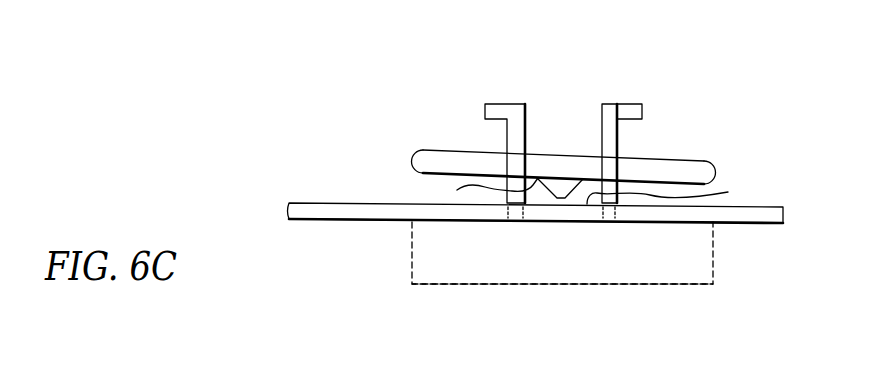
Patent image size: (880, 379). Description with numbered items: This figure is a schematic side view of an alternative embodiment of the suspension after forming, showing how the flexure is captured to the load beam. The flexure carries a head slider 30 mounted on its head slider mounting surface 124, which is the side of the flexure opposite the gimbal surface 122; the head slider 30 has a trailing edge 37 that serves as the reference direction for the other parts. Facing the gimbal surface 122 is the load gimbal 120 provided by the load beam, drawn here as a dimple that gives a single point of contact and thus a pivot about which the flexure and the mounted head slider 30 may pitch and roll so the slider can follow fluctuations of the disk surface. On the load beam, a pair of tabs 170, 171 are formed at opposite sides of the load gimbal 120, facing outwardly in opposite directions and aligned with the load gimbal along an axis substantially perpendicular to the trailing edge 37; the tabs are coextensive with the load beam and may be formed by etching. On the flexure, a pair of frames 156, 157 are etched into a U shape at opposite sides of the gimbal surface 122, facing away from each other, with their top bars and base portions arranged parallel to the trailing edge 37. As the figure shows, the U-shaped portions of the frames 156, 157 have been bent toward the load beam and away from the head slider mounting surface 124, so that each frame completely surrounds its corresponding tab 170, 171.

The head slider 30 is at (612, 287).
The trailing edge 37 is at (713, 285).
The load gimbal 120 is at (468, 186).
The gimbal surface 122 is at (715, 194).
The head slider mounting surface 124 is at (562, 224).
The frame 156 is at (513, 103).
The frame 157 is at (622, 103).
The tab 170 is at (412, 152).
The tab 171 is at (706, 157).